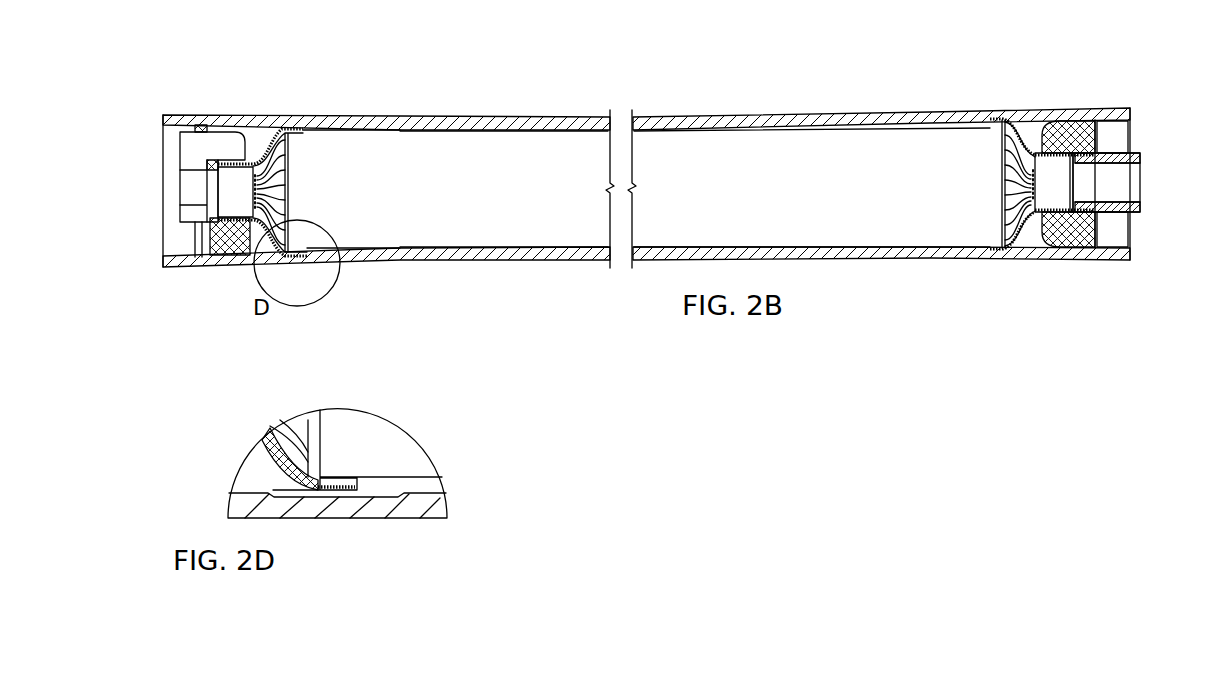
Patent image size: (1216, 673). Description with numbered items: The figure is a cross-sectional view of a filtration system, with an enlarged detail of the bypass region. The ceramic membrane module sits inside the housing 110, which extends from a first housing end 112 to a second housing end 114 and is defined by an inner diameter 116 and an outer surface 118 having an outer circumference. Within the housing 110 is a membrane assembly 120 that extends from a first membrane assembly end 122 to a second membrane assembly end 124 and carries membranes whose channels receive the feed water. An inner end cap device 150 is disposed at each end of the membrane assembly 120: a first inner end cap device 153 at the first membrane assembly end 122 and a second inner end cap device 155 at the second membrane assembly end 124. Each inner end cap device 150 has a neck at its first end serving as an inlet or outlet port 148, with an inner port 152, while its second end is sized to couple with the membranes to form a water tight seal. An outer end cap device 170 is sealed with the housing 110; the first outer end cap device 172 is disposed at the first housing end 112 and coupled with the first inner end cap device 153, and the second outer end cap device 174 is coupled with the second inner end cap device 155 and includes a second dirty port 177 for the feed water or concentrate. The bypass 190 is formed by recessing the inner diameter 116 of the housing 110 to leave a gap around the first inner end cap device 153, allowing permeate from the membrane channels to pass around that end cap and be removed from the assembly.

In FIG. 2B, the housing 110 is at (513, 119).
In FIG. 2B, the first housing end 112 is at (213, 115).
In FIG. 2B, the second housing end 114 is at (1063, 110).
In FIG. 2B, the inner diameter 116 is at (337, 126).
In FIG. 2B, the outer surface 118 is at (313, 121).
In FIG. 2B, the membrane assembly 120 is at (528, 153).
In FIG. 2B, the first membrane assembly end 122 is at (382, 213).
In FIG. 2B, the second membrane assembly end 124 is at (978, 208).
In FIG. 2B, the inlet or outlet port 148 is at (225, 254).
In FIG. 2B, the inner end cap device 150 is at (265, 148).
In FIG. 2B, the inner port 152 is at (227, 203).
In FIG. 2B, the first inner end cap device 153 is at (281, 128).
In FIG. 2B, the second inner end cap device 155 is at (1002, 119).
In FIG. 2B, the outer end cap device 170 is at (183, 180).
In FIG. 2B, the first outer end cap device 172 is at (187, 175).
In FIG. 2B, the second outer end cap device 174 is at (1022, 120).
In FIG. 2B, the second dirty port 177 is at (1117, 160).
In FIG. 2B, the bypass 190 is at (298, 260).
In FIG. 2D, the bypass 190 is at (335, 494).